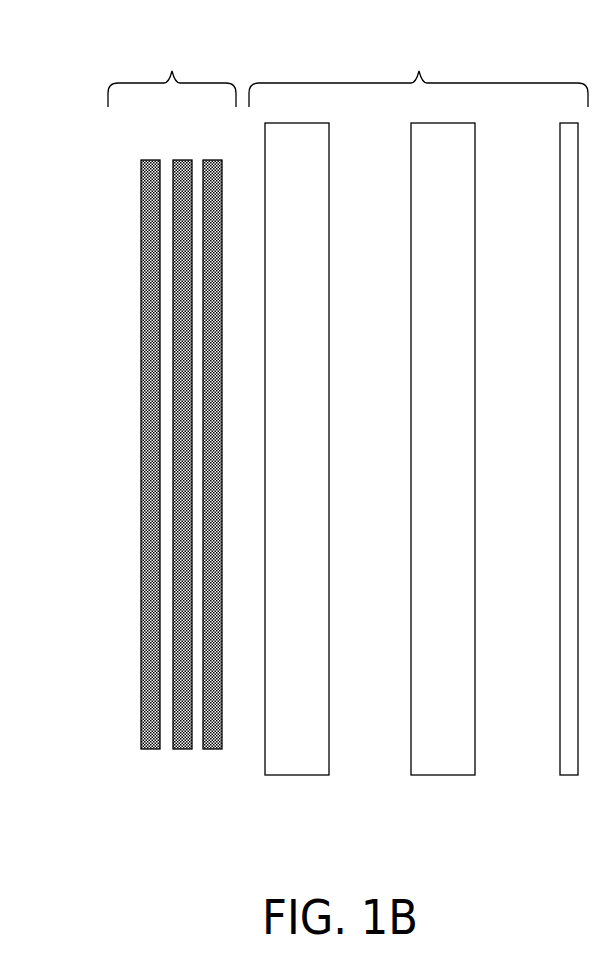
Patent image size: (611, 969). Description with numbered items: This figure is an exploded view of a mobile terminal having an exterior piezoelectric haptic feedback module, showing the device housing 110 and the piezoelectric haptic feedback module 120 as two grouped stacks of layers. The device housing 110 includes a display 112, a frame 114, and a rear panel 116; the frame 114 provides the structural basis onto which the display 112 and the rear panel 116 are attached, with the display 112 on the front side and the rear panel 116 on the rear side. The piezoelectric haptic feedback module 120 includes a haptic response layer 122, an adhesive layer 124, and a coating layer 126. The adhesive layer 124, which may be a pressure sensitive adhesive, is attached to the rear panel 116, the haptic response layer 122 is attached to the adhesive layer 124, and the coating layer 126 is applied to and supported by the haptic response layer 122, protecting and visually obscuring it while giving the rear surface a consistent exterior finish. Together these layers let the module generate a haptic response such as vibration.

The device housing 110 is at (418, 74).
The display 112 is at (561, 776).
The frame 114 is at (411, 776).
The rear panel 116 is at (265, 776).
The piezoelectric haptic feedback module 120 is at (172, 74).
The haptic response layer 122 is at (174, 750).
The adhesive layer 124 is at (204, 750).
The coating layer 126 is at (143, 750).